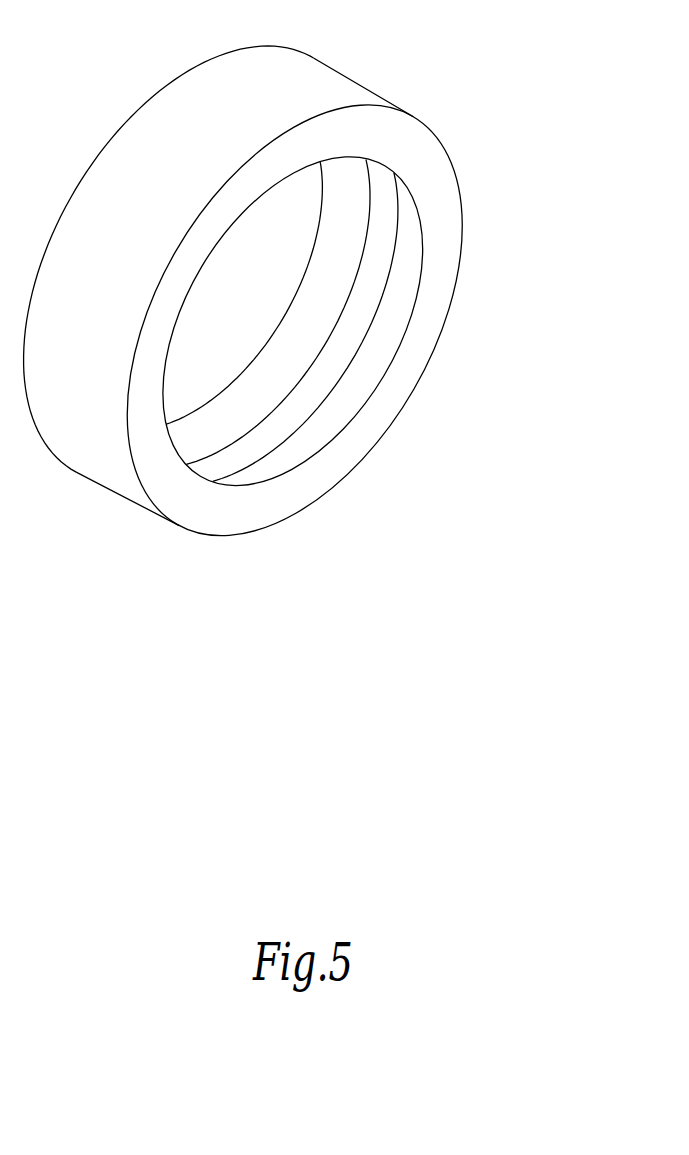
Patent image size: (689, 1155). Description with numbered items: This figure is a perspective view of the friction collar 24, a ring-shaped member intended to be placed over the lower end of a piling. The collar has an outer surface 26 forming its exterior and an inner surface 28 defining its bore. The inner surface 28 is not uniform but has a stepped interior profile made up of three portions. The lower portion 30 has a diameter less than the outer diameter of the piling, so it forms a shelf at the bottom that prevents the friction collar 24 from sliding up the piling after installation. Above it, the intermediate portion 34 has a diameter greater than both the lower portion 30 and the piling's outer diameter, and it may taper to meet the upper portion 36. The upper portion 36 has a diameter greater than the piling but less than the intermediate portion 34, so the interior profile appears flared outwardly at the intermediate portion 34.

The friction collar 24 is at (303, 319).
The outer surface 26 is at (163, 200).
The inner surface 28 is at (282, 321).
The lower portion 30 is at (335, 418).
The intermediate portion 34 is at (365, 285).
The upper portion 36 is at (330, 235).